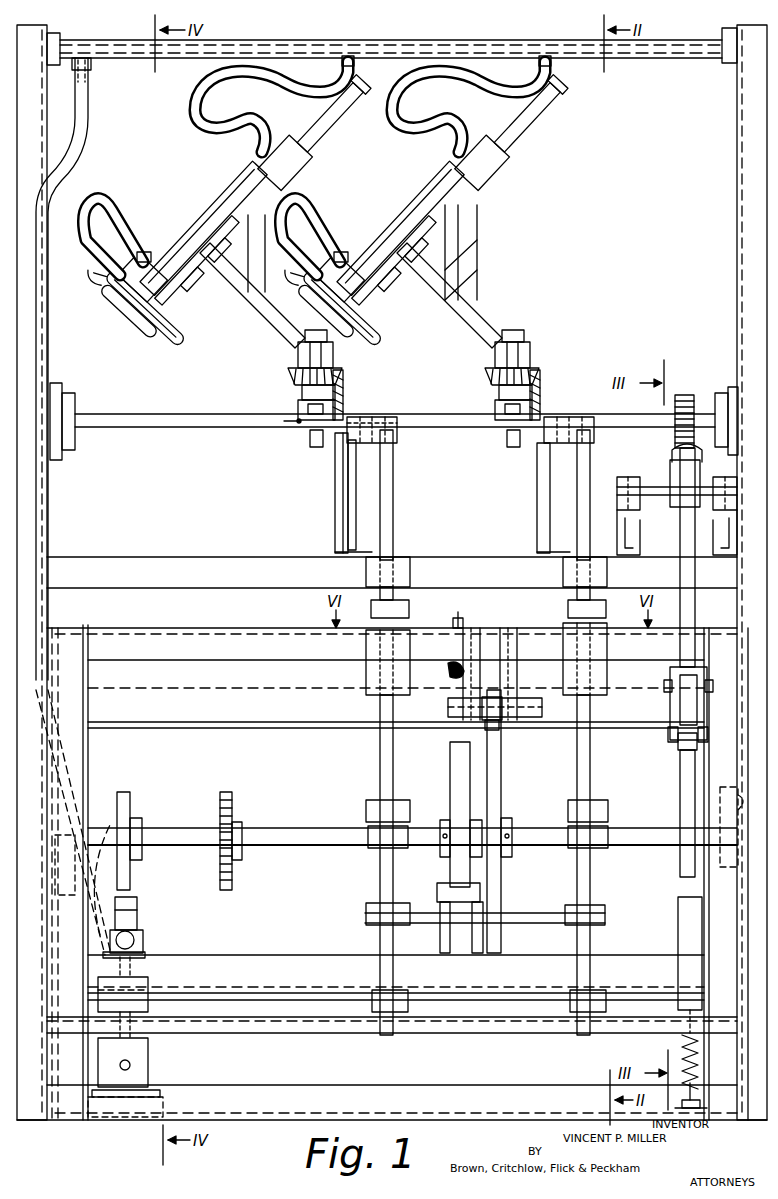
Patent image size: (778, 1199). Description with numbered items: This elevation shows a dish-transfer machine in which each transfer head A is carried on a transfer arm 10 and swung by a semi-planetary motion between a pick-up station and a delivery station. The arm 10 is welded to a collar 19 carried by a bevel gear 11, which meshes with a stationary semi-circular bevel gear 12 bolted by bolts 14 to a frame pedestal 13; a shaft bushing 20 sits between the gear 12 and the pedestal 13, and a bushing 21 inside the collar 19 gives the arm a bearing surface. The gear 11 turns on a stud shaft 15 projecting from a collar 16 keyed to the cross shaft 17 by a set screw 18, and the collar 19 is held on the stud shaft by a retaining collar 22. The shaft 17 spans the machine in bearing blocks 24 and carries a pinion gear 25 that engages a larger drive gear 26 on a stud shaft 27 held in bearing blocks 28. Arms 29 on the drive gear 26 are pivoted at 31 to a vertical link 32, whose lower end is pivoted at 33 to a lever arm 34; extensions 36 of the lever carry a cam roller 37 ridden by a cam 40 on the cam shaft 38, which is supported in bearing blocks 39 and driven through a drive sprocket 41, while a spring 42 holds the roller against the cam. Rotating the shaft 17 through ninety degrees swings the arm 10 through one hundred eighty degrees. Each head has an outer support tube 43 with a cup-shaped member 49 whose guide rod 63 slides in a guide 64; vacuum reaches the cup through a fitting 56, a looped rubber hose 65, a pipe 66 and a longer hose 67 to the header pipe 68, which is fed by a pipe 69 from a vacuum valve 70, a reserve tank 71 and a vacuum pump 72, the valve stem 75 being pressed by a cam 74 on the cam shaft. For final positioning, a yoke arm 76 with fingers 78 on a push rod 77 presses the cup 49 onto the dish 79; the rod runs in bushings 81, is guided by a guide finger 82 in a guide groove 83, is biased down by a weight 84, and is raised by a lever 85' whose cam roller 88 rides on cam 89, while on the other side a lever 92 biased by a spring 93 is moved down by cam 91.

The transfer arm 10 is at (252, 281).
The bevel gear 11 is at (290, 376).
The bevel gear 12 is at (344, 384).
The frame pedestal 13 is at (335, 477).
The bolts 14 is at (365, 412).
The stud shaft 15 is at (302, 394).
The collar 16 is at (301, 435).
The shaft 17 is at (430, 428).
The set screw 18 is at (286, 424).
The collar 19 is at (334, 358).
The shaft bushing 20 is at (354, 445).
The bushing 21 is at (495, 200).
The retaining collar 22 is at (316, 336).
The bearing blocks 24 is at (75, 450).
The pinion gear 25 is at (688, 394).
The drive gear 26 is at (680, 536).
The stud shaft 27 is at (654, 487).
The bearing blocks 28 is at (620, 478).
The arms 29 is at (672, 451).
The pivotal connection 31 is at (700, 478).
The vertical link 32 is at (695, 578).
The pivot point 33 is at (664, 690).
The lever arm 34 is at (670, 678).
The extensions 36 is at (668, 735).
The cam roller 37 is at (683, 754).
The cam shaft 38 is at (630, 830).
The bearing blocks 39 is at (80, 790).
The cam 40 is at (680, 786).
The drive sprocket 41 is at (233, 806).
The spring 42 is at (680, 1037).
The outer support tube 43 is at (316, 129).
The cup-shaped member 49 is at (145, 308).
The fitting 56 is at (96, 276).
The guide rod 63 is at (197, 260).
The guide 64 is at (205, 265).
The rubber hose 65 is at (117, 237).
The pipe 66 is at (192, 225).
The hose 67 is at (212, 84).
The header pipe 68 is at (402, 44).
The pipe 69 is at (88, 106).
The vacuum valve 70 is at (145, 941).
The reserve tank 71 is at (148, 1001).
The vacuum pump 72 is at (148, 1056).
The cam 74 is at (130, 808).
The valve stem 75 is at (137, 908).
The yoke arm 76 is at (392, 410).
The push rod 77 is at (393, 475).
The fingers 78 is at (310, 446).
The dish 79 is at (128, 311).
The bushings 81 is at (410, 572).
The guide finger 82 is at (409, 604).
The guide groove 83 is at (400, 630).
The supplemental weight 84 is at (366, 810).
The pin 85' is at (433, 646).
The cam roller 88 is at (496, 720).
The cam 89 is at (501, 806).
The cam 91 is at (450, 795).
The lever 92 is at (532, 916).
The spring 93 is at (450, 676).
The transfer head A is at (236, 194).